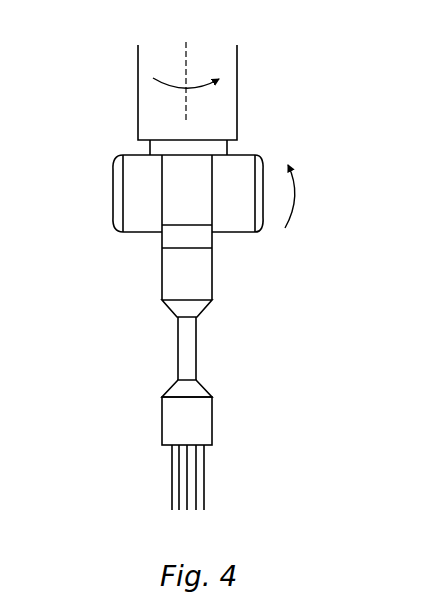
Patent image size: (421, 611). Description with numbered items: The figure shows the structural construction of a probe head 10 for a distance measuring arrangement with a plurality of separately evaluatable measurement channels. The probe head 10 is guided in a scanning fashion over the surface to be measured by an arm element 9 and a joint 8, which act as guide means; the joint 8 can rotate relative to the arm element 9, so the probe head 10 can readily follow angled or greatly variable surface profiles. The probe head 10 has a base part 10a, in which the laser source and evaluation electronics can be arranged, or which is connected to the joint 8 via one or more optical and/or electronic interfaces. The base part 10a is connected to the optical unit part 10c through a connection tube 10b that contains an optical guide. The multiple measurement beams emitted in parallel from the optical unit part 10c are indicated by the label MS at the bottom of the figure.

The arm element 9 is at (223, 55).
The joint 8 is at (235, 222).
The probe head 10 is at (190, 302).
The base part 10a is at (198, 273).
The connection tube 10b is at (187, 345).
The optical unit part 10c is at (197, 415).
The measuring strands / fibers MS is at (209, 477).